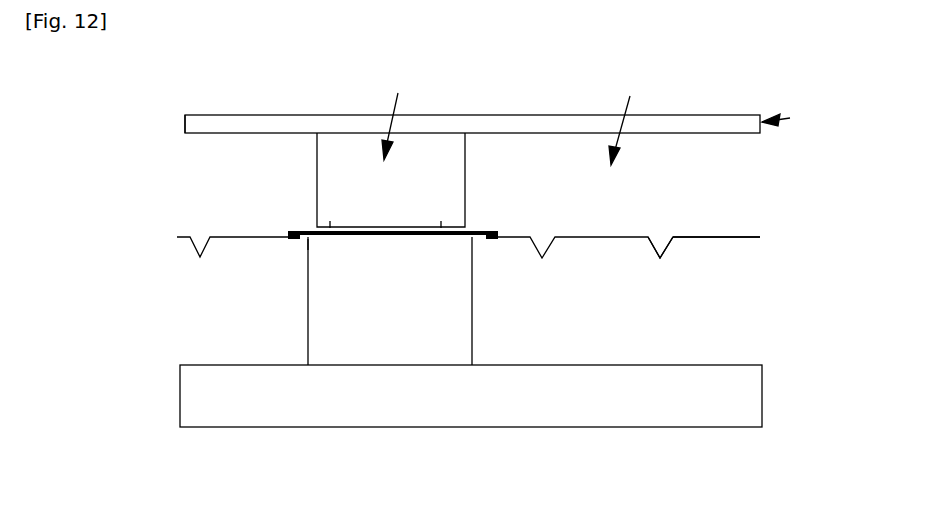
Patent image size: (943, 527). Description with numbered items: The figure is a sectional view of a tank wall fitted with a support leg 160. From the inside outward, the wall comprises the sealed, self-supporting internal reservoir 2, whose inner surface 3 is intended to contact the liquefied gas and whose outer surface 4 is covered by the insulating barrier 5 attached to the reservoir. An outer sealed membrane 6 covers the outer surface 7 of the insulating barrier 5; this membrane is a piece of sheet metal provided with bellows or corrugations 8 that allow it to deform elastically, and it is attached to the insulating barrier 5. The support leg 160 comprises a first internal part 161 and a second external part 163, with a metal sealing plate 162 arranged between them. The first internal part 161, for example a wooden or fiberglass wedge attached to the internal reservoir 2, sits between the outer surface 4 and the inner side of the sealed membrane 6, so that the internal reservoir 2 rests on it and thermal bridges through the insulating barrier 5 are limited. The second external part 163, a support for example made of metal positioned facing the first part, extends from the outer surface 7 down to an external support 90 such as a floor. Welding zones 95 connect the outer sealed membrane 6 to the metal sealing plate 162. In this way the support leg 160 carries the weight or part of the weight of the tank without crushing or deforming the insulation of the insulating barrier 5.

The internal reservoir 2 is at (790, 118).
The inner surface 3 is at (273, 115).
The outer surface 4 is at (208, 133).
The insulating barrier 5 is at (624, 115).
The outer sealed membrane 6 is at (752, 237).
The outer surface 7 is at (718, 240).
The corrugations 8 is at (655, 250).
The external support 90 is at (690, 428).
The welding zones 95 is at (298, 239).
The support leg 160 is at (400, 113).
The first internal part 161 is at (317, 176).
The metal sealing plate 162 is at (482, 231).
The second external part 163 is at (308, 330).